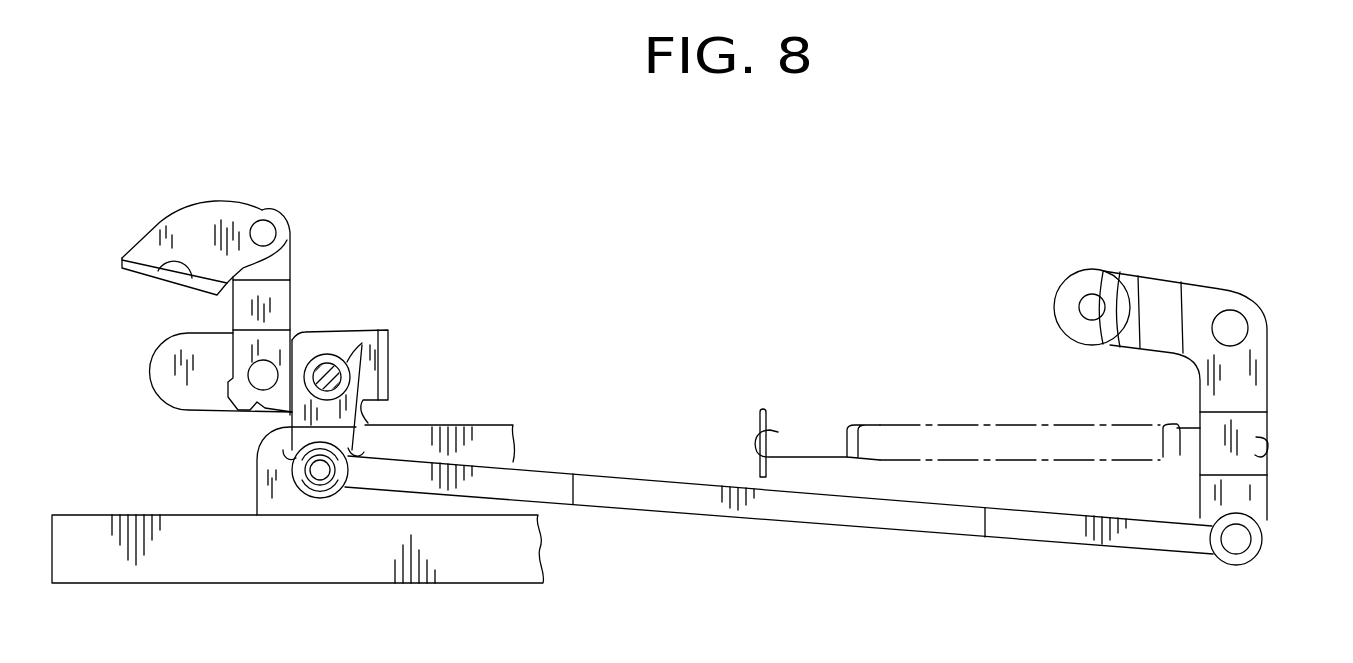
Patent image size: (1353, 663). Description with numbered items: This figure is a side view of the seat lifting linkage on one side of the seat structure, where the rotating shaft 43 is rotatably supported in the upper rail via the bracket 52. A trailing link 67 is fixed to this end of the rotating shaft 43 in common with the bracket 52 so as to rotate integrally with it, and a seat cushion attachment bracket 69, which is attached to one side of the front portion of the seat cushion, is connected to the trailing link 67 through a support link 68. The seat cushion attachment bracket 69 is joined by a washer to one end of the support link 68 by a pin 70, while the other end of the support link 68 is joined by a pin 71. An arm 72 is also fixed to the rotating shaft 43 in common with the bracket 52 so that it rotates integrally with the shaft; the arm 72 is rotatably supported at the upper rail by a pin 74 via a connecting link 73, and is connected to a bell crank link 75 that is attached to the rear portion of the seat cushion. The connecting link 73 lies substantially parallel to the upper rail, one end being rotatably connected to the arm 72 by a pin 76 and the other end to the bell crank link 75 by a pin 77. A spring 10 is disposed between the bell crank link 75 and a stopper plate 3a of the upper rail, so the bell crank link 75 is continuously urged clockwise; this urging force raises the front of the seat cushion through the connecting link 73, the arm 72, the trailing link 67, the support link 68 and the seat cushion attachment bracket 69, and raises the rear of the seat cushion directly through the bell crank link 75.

The stopper plate 3a is at (762, 410).
The springs 10 is at (1017, 418).
The rotating shaft 43 is at (328, 370).
The bracket 52 is at (362, 340).
The trailing link 67 is at (182, 388).
The support link 68 is at (273, 303).
The seat cushion attachment bracket 69 is at (207, 212).
The pin 70 is at (266, 228).
The pin 71 is at (267, 383).
The arm 72 is at (335, 408).
The connecting link 73 is at (795, 510).
The pin 74 is at (1237, 325).
The bell crank link 75 is at (1202, 302).
The pin 76 is at (322, 482).
The pin 77 is at (1243, 538).